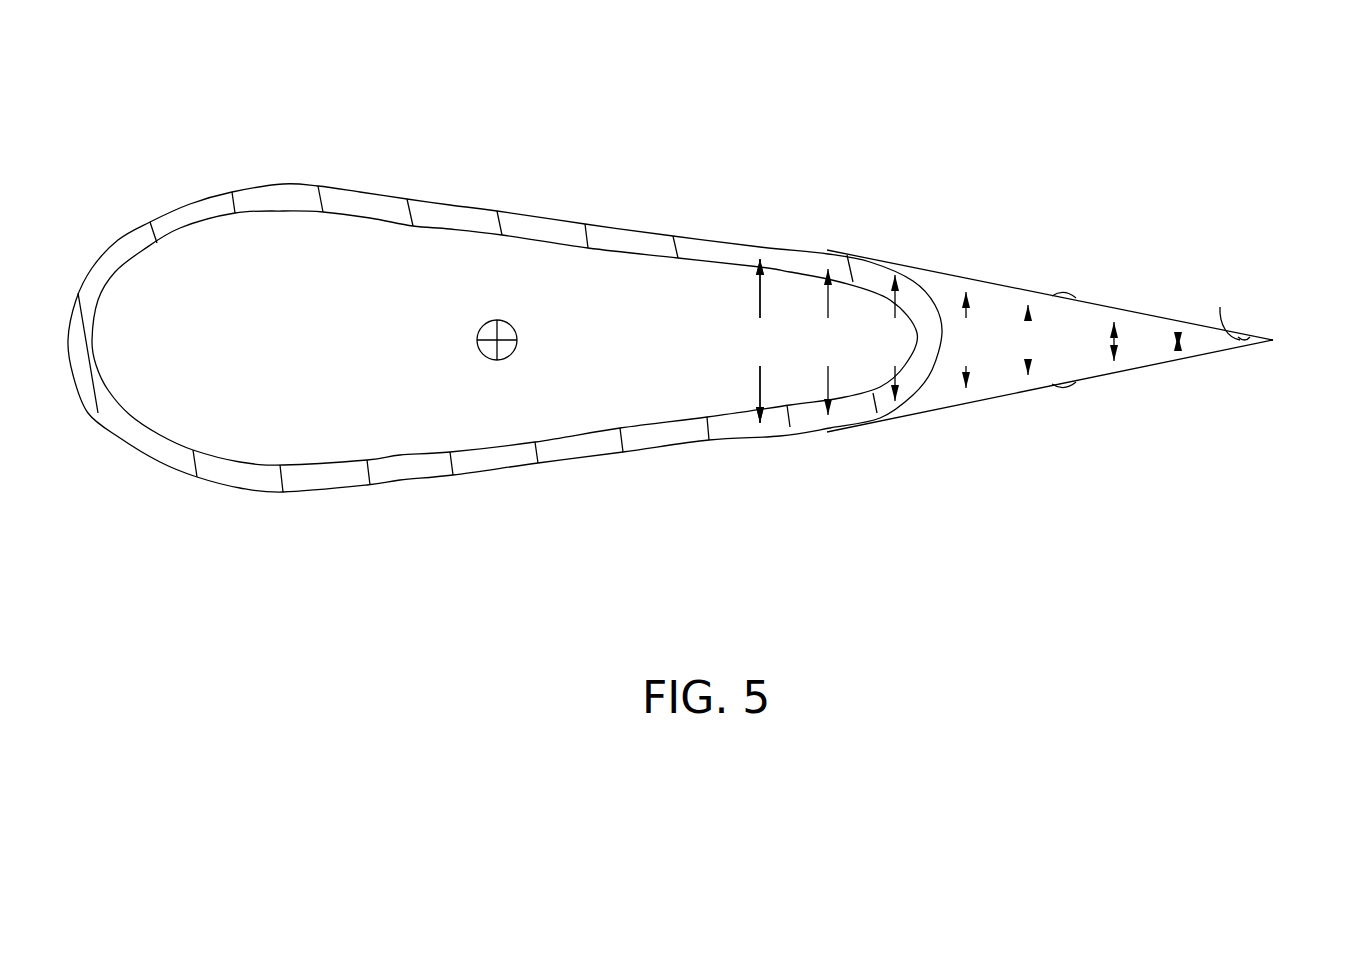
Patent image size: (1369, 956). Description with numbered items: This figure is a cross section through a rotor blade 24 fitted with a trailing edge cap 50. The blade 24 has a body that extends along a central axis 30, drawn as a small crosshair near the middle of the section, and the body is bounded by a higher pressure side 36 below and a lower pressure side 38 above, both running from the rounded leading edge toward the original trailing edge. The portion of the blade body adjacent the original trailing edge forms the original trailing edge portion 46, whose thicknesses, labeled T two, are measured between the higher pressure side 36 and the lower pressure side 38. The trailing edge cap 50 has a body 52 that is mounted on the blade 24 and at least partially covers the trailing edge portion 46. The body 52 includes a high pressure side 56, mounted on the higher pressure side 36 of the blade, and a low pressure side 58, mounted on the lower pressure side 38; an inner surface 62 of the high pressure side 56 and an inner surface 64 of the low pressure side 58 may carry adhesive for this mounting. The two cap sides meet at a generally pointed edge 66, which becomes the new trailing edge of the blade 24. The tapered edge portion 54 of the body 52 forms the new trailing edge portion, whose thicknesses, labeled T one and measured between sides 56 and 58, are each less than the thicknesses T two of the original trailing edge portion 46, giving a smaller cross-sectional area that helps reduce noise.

The blade 24 is at (196, 172).
The central axis 30 is at (485, 347).
The higher pressure side 36 is at (490, 473).
The lower pressure side 38 is at (323, 183).
The trailing edge portion 46 is at (519, 140).
The trailing edge cap 50 is at (1093, 413).
The body 52 is at (936, 422).
The edge portion 54 is at (999, 215).
The high pressure side 56 is at (858, 430).
The low pressure side 58 is at (858, 250).
The inner surface 62 is at (1062, 381).
The inner surface 64 is at (1062, 299).
The edge 66 is at (1308, 334).